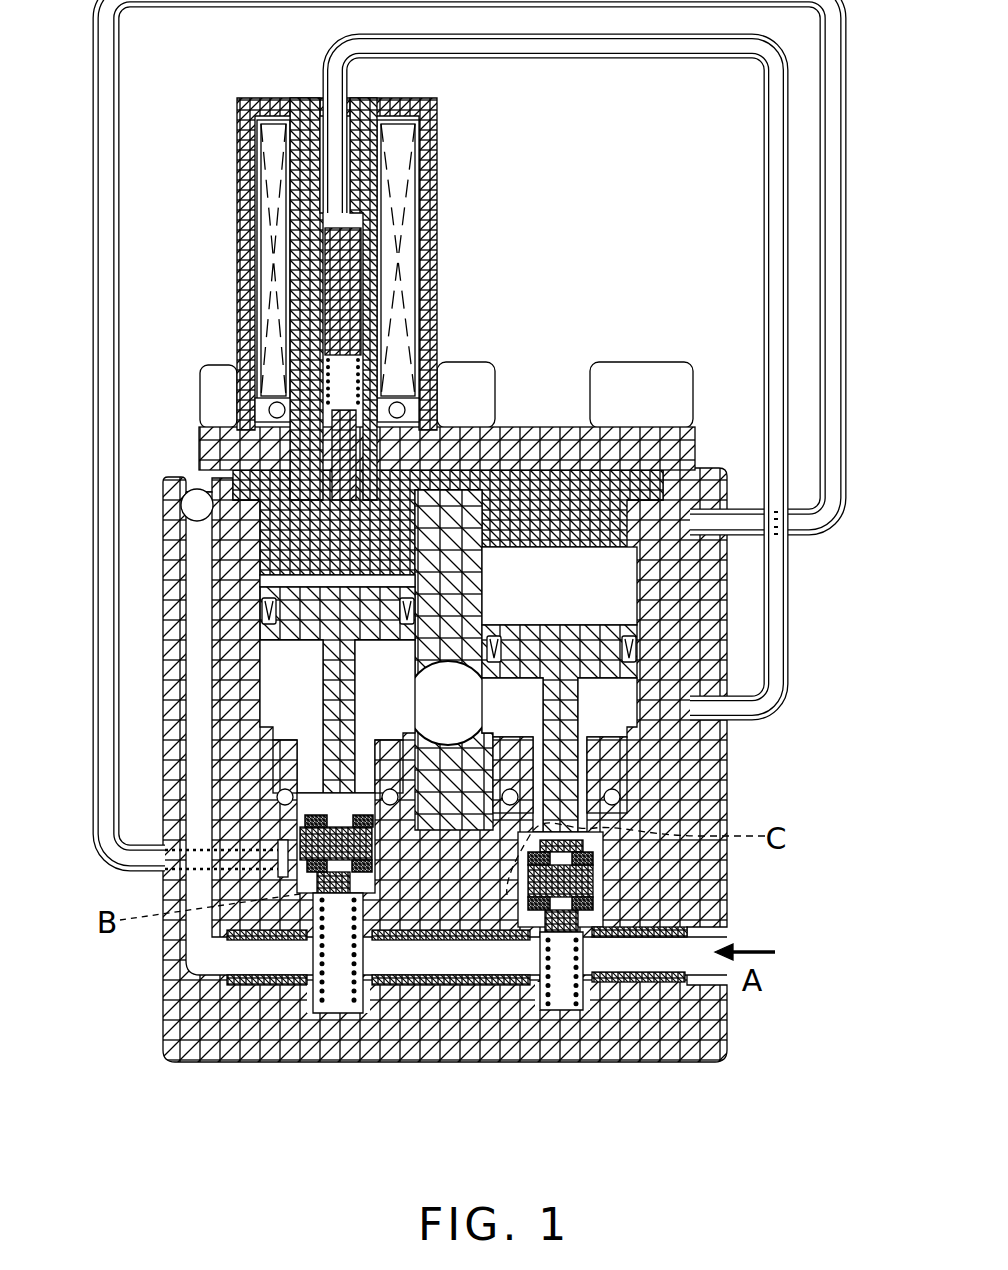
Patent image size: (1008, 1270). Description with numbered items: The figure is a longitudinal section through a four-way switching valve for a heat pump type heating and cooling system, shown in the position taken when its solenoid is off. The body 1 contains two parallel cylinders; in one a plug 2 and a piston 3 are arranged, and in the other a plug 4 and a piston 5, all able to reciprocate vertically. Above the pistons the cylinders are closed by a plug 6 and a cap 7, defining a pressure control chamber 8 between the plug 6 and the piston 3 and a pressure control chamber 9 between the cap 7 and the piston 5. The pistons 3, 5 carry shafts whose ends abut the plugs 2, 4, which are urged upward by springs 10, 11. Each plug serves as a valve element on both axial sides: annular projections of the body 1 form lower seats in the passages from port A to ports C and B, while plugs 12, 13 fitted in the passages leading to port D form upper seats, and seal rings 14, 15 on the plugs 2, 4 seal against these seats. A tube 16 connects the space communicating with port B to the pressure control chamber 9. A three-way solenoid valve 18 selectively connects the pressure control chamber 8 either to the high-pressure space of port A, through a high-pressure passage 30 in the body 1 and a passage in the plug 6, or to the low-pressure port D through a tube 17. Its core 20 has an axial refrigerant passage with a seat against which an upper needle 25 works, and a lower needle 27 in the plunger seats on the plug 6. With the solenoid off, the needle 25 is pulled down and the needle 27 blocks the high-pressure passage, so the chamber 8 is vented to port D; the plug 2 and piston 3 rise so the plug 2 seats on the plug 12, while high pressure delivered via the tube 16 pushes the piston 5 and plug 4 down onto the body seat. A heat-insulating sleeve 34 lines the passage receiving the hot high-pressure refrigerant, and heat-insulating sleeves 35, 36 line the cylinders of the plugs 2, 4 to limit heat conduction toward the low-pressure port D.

The body 1 is at (730, 800).
The plug 2 is at (350, 1013).
The piston 3 is at (262, 633).
The plug 4 is at (578, 1015).
The piston 5 is at (632, 668).
The plug 6 is at (253, 488).
The cap 7 is at (550, 477).
The pressure control chamber 8 is at (262, 578).
The pressure control chamber 9 is at (612, 573).
The spring 10 is at (378, 985).
The spring 11 is at (598, 985).
The plug 12 is at (272, 772).
The plug 13 is at (637, 763).
The seal ring 14 is at (414, 868).
The seal ring 15 is at (540, 906).
The tube 16 is at (119, 183).
The tube 17 is at (790, 632).
The three-way solenoid valve 18 is at (456, 114).
The core 20 is at (365, 172).
The needle 25 is at (340, 268).
The needle 27 is at (345, 405).
The high-pressure passage 30 is at (202, 690).
The heat-insulating sleeve 34 is at (648, 985).
The heat-insulating sleeve 35 is at (285, 843).
The heat-insulating sleeve 36 is at (467, 882).